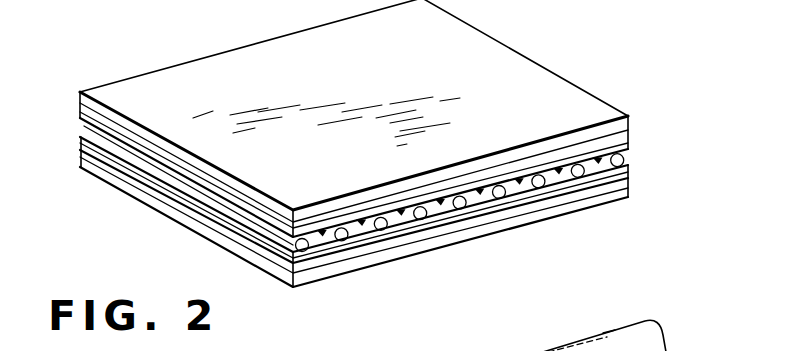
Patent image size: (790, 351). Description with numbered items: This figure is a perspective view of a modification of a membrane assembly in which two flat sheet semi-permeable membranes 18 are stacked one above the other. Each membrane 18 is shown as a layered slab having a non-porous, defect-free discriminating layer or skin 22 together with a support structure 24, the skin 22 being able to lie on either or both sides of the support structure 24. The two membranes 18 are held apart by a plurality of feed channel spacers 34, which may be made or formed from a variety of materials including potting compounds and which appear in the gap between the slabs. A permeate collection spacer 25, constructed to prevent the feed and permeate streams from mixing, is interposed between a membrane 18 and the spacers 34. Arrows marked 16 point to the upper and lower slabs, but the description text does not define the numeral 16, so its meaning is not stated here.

The panel 16 is at (147, 67).
The semi-permeable membrane 18 is at (566, 66).
The discriminating layer 22 is at (160, 137).
The support structure 24 is at (182, 168).
The permeate collection spacer 25 is at (631, 152).
The feed channel spacer 34 is at (622, 165).